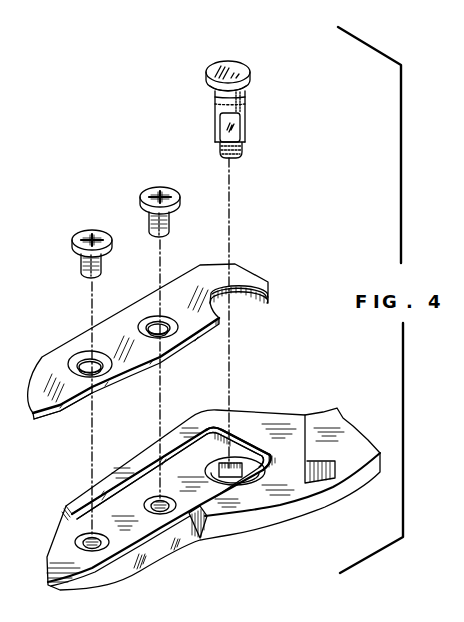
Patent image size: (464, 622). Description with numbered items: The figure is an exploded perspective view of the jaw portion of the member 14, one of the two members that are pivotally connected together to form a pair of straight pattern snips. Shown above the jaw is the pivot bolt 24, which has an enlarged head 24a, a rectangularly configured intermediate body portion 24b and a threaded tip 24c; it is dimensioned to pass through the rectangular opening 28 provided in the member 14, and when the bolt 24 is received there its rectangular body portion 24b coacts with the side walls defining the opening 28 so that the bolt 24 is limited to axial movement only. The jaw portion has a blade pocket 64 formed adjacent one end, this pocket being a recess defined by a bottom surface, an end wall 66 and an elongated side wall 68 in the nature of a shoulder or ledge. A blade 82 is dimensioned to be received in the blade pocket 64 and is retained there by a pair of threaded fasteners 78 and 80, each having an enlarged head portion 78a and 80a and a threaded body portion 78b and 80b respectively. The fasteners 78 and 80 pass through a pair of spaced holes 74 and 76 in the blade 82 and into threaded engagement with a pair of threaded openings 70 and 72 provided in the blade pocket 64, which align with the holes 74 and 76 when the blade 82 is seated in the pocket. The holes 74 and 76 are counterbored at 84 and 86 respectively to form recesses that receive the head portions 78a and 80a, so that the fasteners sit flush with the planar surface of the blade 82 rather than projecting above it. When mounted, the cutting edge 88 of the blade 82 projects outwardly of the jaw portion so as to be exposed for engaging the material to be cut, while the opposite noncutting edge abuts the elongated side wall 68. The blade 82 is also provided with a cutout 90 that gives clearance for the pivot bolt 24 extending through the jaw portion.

The member 14 is at (337, 504).
The pivot bolt 24 is at (229, 60).
The enlarged head 24a is at (250, 83).
The intermediate body portion 24b is at (243, 122).
The threaded tip 24c is at (241, 151).
The rectangular opening 28 is at (232, 477).
The blade pocket 64 is at (205, 455).
The end wall 66 is at (248, 445).
The elongated side wall 68 is at (137, 474).
The threaded opening 70 is at (160, 514).
The threaded opening 72 is at (76, 547).
The hole 74 is at (167, 335).
The hole 76 is at (101, 372).
The threaded fastener 78 is at (165, 188).
The enlarged head portion 78a is at (147, 192).
The threaded body portion 78b is at (170, 226).
The threaded fastener 80 is at (92, 231).
The enlarged head portion 80a is at (78, 237).
The threaded body portion 80b is at (80, 262).
The blade 82 is at (253, 271).
The counterbore 84 is at (146, 318).
The counterbore 86 is at (77, 357).
The cutting edge 88 is at (84, 396).
The cutout 90 is at (240, 300).